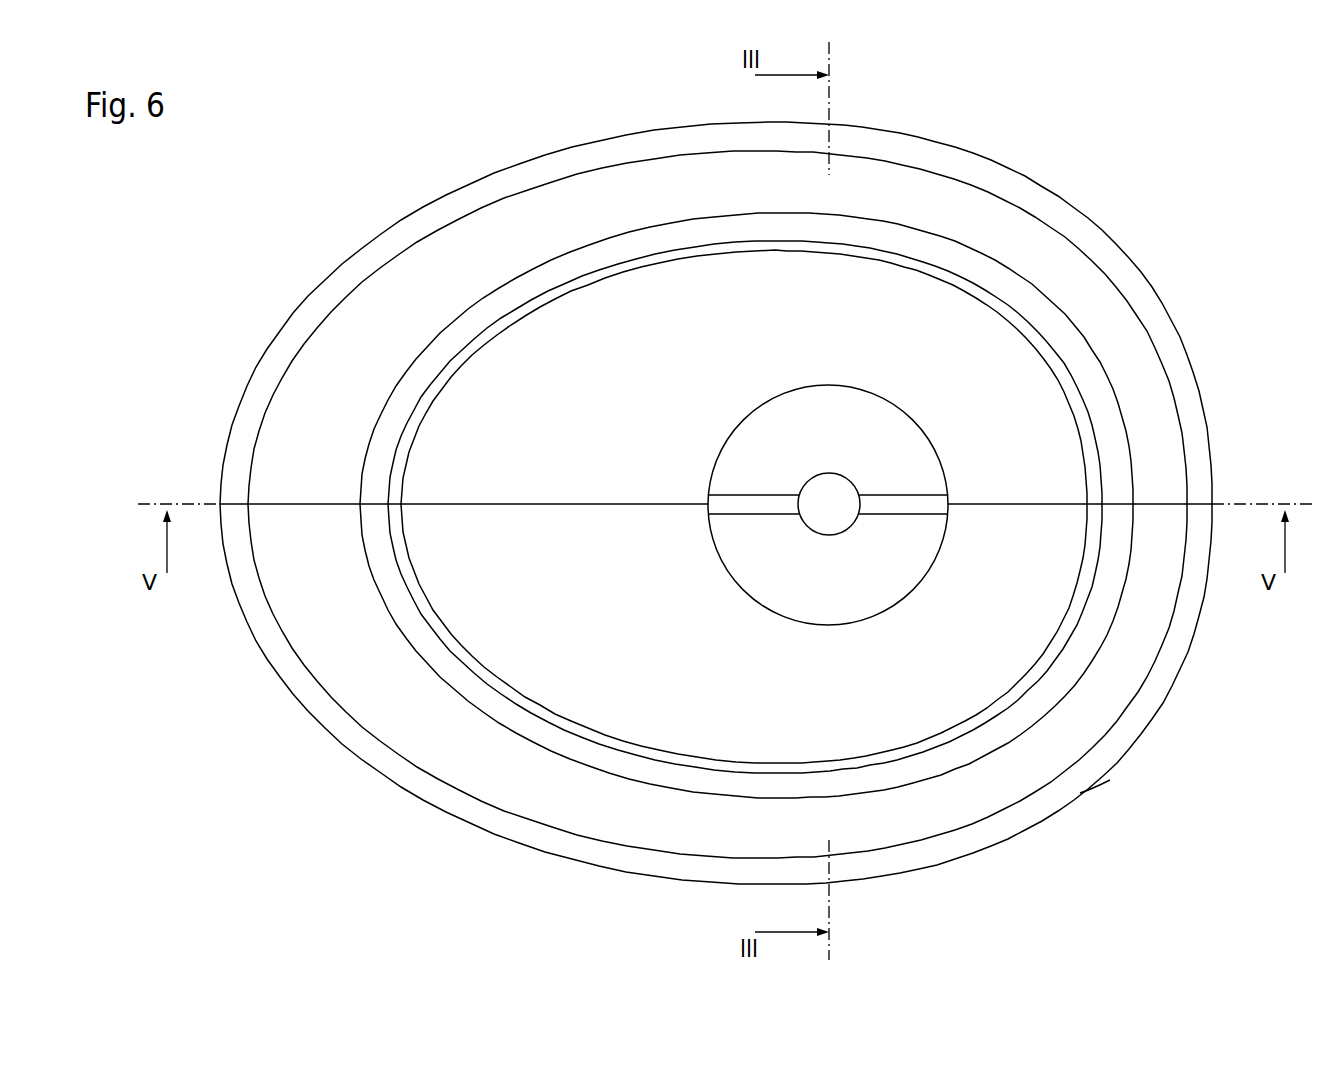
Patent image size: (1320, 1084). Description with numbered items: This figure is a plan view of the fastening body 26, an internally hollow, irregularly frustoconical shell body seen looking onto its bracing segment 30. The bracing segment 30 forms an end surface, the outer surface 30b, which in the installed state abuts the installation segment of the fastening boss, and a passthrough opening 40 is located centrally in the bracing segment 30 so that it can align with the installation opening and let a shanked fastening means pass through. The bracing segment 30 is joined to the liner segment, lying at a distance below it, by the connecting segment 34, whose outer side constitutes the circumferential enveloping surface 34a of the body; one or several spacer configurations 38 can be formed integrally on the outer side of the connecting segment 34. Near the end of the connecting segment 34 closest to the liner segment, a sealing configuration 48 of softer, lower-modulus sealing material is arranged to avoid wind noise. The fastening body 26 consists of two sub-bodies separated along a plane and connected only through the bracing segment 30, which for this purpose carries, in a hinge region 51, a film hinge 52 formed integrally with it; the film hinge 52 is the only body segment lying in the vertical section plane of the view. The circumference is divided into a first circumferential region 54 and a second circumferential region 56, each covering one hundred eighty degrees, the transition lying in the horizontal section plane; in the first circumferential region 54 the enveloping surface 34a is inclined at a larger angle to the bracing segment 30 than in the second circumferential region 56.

The fastening body 26 is at (272, 286).
The second circumferential region 56 is at (478, 262).
The first circumferential region 54 is at (1062, 263).
The spacer configuration 38 is at (1083, 373).
The enveloping surface 34a is at (641, 356).
The connecting segment 34 is at (801, 521).
The sealing configuration 48 is at (1060, 795).
The bracing segment 30 is at (750, 557).
The outer surface 30b is at (828, 482).
The passthrough opening 40 is at (828, 508).
The film hinge 52 is at (727, 503).
The hinge region 51 is at (906, 520).